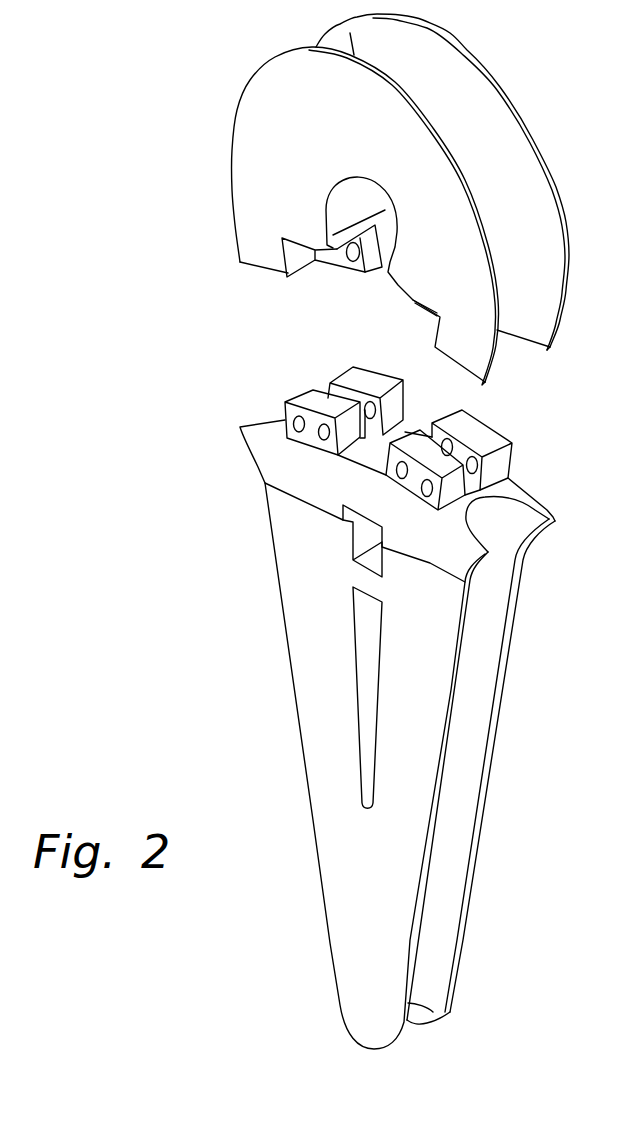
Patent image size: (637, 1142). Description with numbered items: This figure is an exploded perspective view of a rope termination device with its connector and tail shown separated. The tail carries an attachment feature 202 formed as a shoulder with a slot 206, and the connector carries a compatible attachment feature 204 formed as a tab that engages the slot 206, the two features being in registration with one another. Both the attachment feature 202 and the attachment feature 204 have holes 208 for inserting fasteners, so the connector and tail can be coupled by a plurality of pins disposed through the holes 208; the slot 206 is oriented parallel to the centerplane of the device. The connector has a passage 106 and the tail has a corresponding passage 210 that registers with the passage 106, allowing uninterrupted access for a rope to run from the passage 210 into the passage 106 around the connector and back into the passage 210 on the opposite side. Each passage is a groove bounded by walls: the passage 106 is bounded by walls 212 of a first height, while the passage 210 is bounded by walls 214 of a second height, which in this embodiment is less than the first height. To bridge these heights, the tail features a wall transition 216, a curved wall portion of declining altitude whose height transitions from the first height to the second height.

The passage 106 is at (505, 138).
The walls 212 is at (232, 133).
The attachment feature 204 is at (347, 270).
The slot 206 is at (328, 382).
The attachment feature 202 is at (295, 397).
The holes 208 is at (284, 420).
The passage 210 is at (465, 770).
The walls 214 is at (486, 912).
The wall transition 216 is at (538, 541).